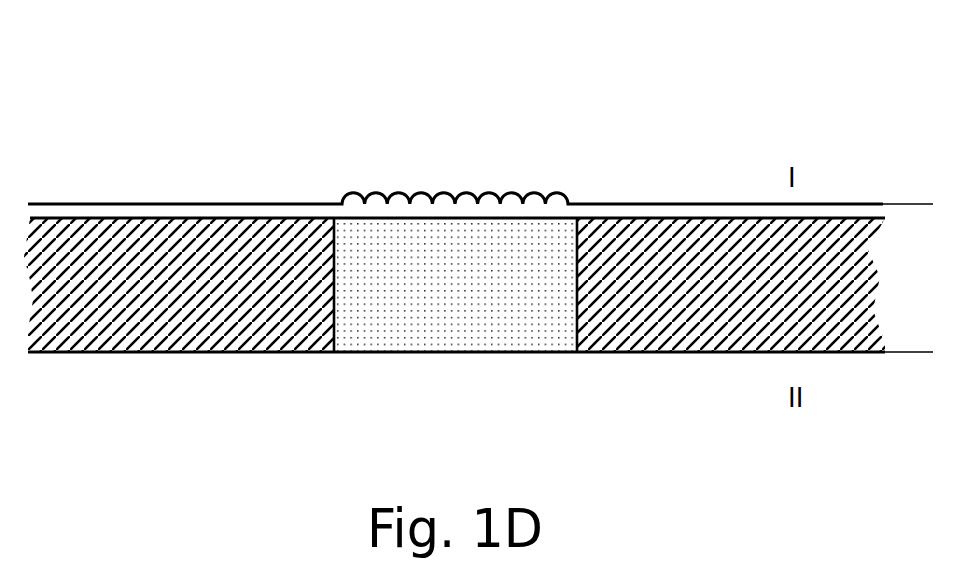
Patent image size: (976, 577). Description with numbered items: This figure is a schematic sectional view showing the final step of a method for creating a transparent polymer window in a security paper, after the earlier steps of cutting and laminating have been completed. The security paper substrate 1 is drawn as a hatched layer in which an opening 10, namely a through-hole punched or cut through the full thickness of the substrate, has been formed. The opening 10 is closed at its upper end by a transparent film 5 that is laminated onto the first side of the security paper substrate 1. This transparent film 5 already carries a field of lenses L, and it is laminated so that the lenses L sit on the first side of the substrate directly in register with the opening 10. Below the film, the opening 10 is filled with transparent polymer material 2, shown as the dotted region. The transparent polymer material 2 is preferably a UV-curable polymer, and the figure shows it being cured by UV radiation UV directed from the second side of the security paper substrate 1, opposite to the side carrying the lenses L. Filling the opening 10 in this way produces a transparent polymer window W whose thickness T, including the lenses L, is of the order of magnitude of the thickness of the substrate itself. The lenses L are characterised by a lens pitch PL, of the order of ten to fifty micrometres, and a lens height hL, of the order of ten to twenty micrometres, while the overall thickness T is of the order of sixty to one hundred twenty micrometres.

The security paper substrate 1 is at (86, 336).
The transparent polymer material 2 is at (542, 330).
The transparent film 5 is at (144, 209).
The opening 10 is at (340, 287).
The lenses L is at (438, 181).
The transparent polymer window W is at (460, 122).
The lens pitch PL is at (518, 193).
The lens height hL is at (597, 152).
The thickness T is at (913, 204).
The UV radiation UV is at (458, 366).